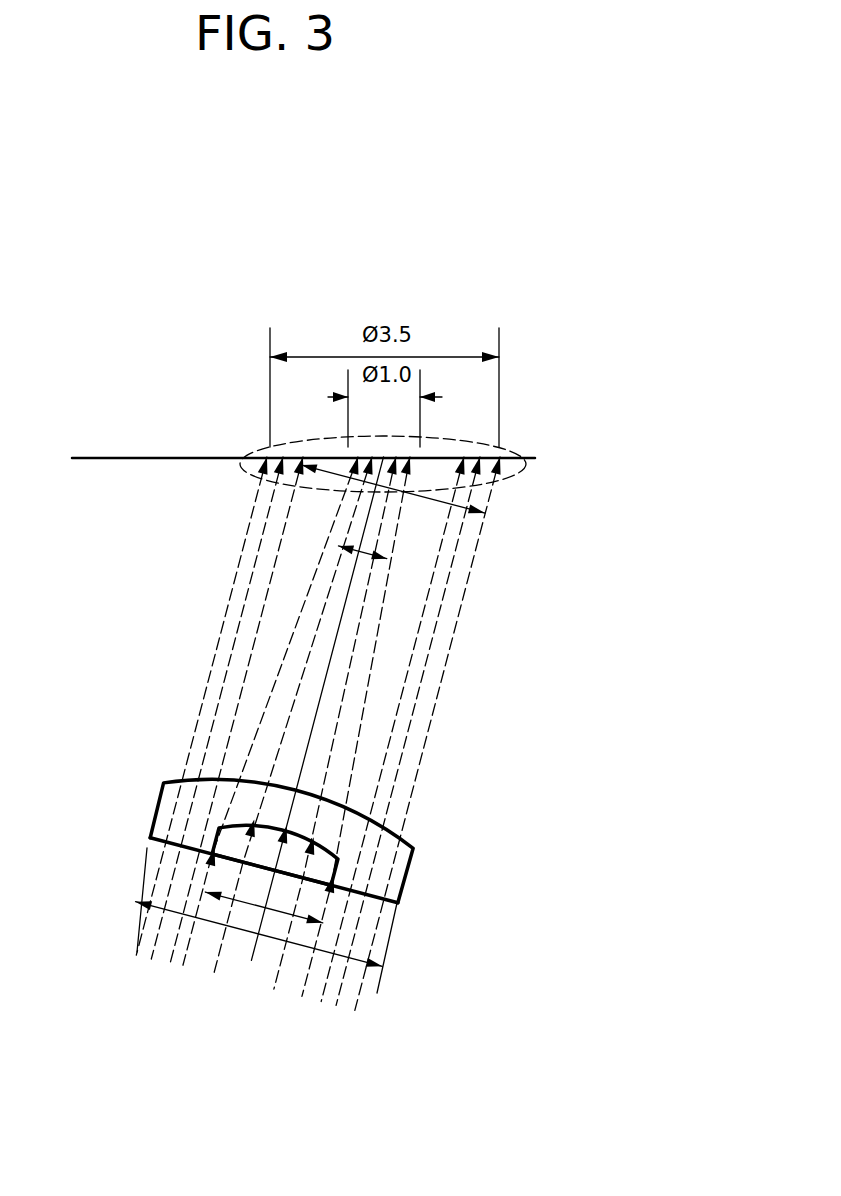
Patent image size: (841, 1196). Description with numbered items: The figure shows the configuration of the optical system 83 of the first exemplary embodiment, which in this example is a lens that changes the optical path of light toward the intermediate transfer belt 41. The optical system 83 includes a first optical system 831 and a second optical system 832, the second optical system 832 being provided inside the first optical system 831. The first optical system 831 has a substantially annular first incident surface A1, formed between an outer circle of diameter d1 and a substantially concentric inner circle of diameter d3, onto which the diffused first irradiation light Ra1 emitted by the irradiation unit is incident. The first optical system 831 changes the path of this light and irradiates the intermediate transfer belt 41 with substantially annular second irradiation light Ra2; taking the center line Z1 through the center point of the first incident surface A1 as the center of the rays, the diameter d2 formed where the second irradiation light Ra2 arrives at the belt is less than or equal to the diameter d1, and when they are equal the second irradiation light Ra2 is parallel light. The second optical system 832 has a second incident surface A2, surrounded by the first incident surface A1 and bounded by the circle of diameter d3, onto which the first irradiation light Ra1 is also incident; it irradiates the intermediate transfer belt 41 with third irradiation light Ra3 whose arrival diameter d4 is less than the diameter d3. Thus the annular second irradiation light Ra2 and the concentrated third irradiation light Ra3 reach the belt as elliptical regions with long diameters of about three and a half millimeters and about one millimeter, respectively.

The intermediate transfer belt 41 is at (130, 460).
The optical system 83 is at (227, 815).
The first optical system 831 is at (163, 784).
The second optical system 832 is at (228, 843).
The first irradiation light Ra1 is at (140, 940).
The second irradiation light Ra2 is at (225, 637).
The third irradiation light Ra3 is at (294, 710).
The first incident surface A1 is at (362, 895).
The second incident surface A2 is at (336, 886).
The center line Z1 is at (251, 961).
The diameter d1 is at (301, 944).
The diameter d2 is at (432, 503).
The diameter d3 is at (249, 905).
The diameter d4 is at (360, 553).